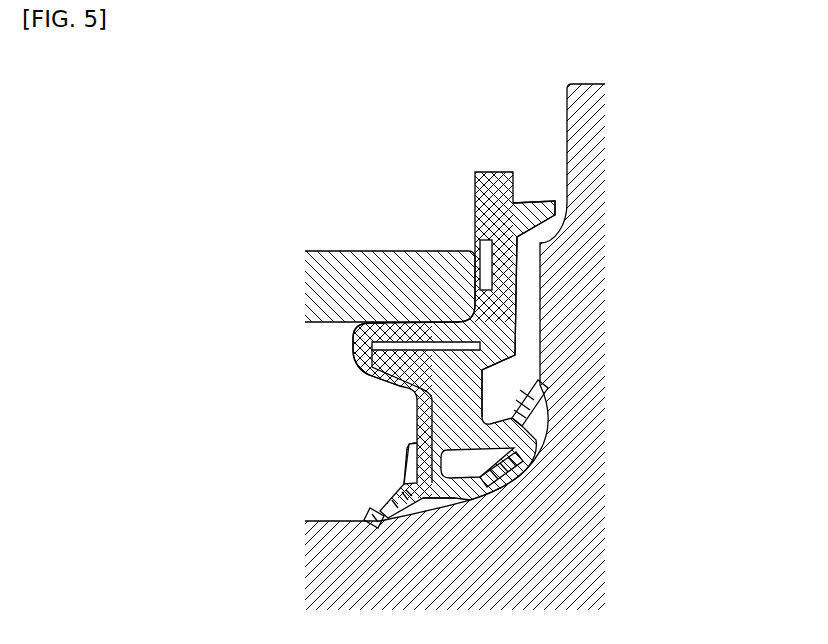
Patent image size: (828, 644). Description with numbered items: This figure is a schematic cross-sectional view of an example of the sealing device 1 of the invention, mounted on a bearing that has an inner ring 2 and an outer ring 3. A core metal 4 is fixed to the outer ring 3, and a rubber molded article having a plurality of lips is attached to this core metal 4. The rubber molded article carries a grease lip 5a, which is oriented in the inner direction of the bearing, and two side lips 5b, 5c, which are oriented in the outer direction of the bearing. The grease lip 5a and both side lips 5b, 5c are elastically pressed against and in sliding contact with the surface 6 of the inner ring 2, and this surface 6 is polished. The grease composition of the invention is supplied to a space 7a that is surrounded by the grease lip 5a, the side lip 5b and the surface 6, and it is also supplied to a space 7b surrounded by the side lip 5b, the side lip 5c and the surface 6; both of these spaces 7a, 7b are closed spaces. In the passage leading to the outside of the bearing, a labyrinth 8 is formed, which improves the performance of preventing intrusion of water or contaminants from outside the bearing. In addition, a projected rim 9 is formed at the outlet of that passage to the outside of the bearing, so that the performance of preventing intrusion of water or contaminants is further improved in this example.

The sealing device 1 is at (320, 409).
The inner ring 2 is at (572, 322).
The outer ring 3 is at (390, 278).
The core metal 4 is at (352, 352).
The grease lip 5a is at (375, 520).
The side lip 5b is at (495, 472).
The side lip 5c is at (530, 392).
The surface 6 is at (340, 520).
The space 7a is at (438, 510).
The space 7b is at (503, 443).
The labyrinth 8 is at (530, 295).
The projected rim 9 is at (533, 214).